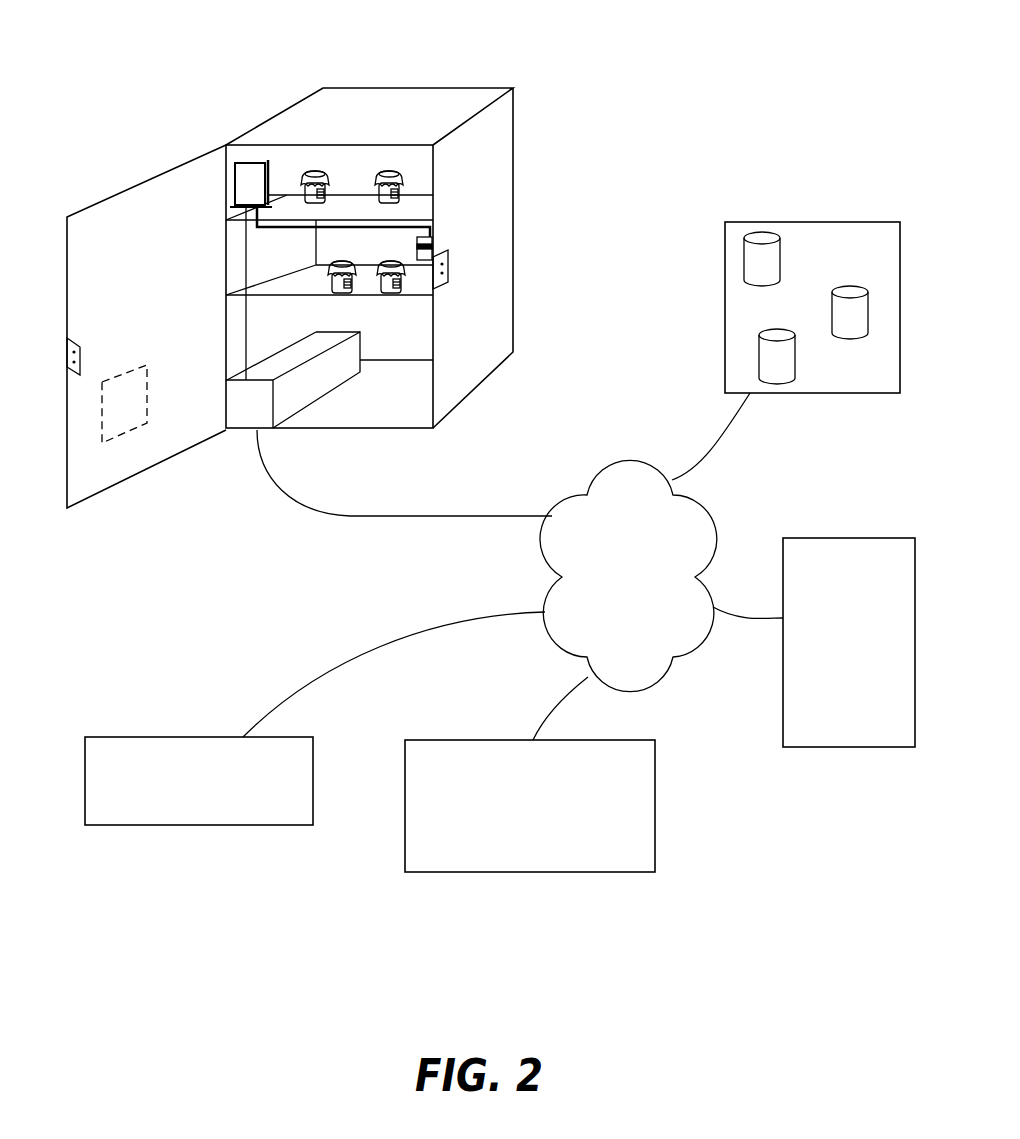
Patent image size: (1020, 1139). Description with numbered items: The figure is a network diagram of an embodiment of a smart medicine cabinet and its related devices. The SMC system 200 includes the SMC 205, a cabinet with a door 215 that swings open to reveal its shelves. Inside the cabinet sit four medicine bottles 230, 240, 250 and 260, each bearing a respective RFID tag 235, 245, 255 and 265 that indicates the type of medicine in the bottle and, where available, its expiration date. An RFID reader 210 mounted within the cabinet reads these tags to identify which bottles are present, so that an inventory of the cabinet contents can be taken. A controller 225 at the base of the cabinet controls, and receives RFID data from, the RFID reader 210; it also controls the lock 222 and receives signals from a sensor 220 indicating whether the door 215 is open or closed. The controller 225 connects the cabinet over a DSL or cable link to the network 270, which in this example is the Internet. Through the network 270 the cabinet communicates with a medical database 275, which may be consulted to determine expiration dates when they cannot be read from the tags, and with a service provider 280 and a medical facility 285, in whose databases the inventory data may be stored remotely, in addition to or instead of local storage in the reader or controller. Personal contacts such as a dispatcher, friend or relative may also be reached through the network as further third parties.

The SMC system 200 is at (420, 68).
The smart medicine cabinet 205 is at (298, 97).
The RFID reader 210 is at (250, 165).
The door 215 is at (162, 437).
The sensor 220 is at (436, 250).
The lock 222 is at (65, 357).
The controller 225 is at (253, 408).
The medicine bottle 230 is at (306, 190).
The RFID tag 235 is at (332, 168).
The medicine bottle 240 is at (378, 192).
The RFID tag 245 is at (401, 192).
The medicine bottle 250 is at (334, 295).
The RFID tag 255 is at (345, 294).
The medicine bottle 260 is at (374, 275).
The RFID tag 265 is at (394, 266).
The network 270 is at (622, 473).
The medical database 275 is at (805, 222).
The service provider 280 is at (835, 748).
The medical facility 285 is at (532, 872).